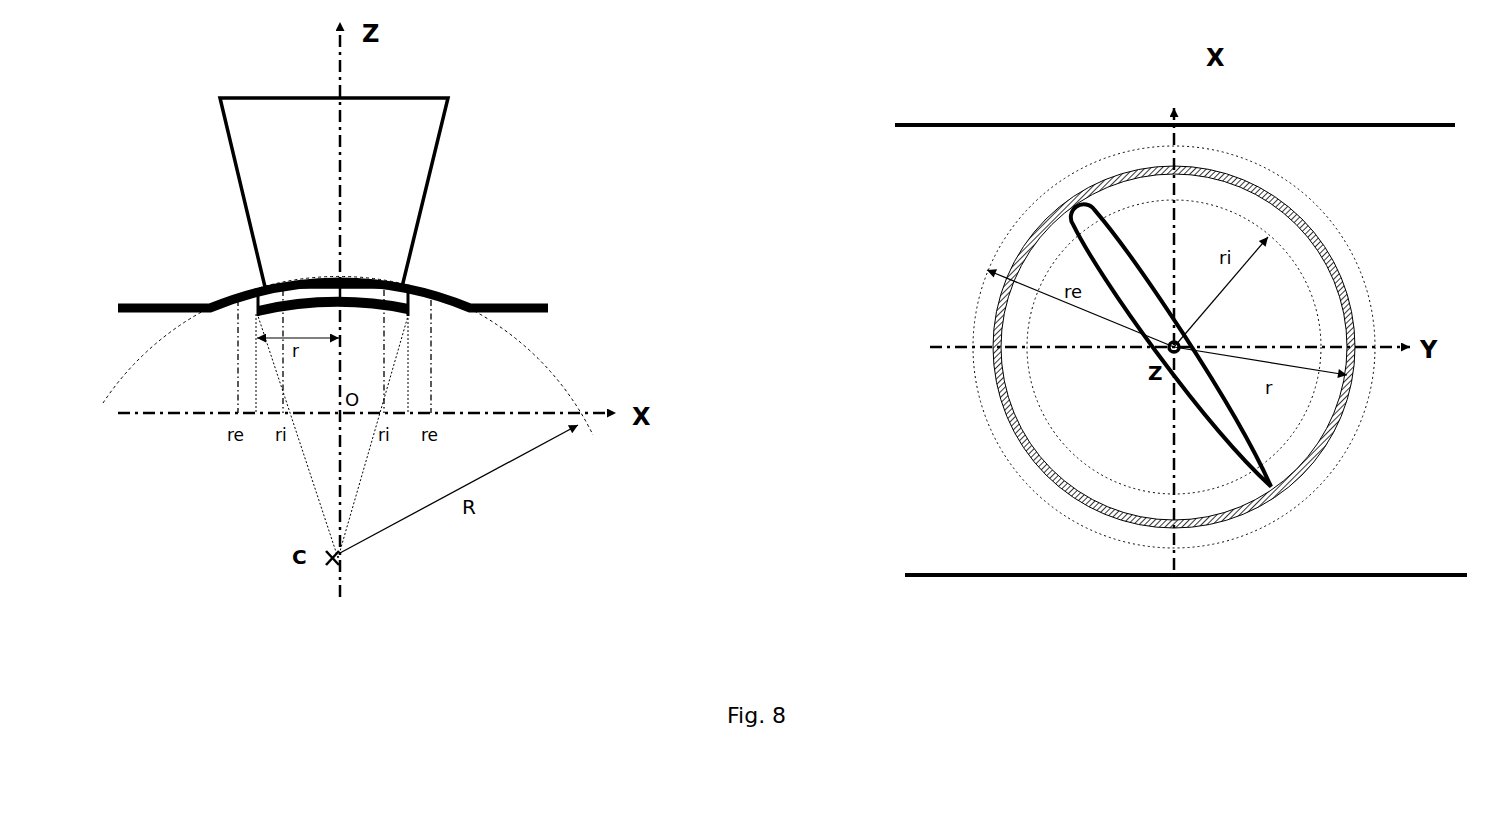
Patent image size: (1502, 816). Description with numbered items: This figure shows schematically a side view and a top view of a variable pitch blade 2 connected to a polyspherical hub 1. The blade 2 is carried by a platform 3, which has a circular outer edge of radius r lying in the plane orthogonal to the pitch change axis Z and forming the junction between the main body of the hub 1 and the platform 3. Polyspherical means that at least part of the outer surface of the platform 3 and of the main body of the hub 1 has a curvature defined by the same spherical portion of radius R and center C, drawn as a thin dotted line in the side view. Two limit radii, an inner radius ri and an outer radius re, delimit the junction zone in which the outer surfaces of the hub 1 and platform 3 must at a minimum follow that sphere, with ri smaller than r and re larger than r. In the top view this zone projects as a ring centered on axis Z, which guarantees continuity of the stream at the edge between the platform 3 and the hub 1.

The hub 1 is at (510, 370).
The variable pitch blade 2 is at (355, 128).
The platform 3 is at (402, 280).